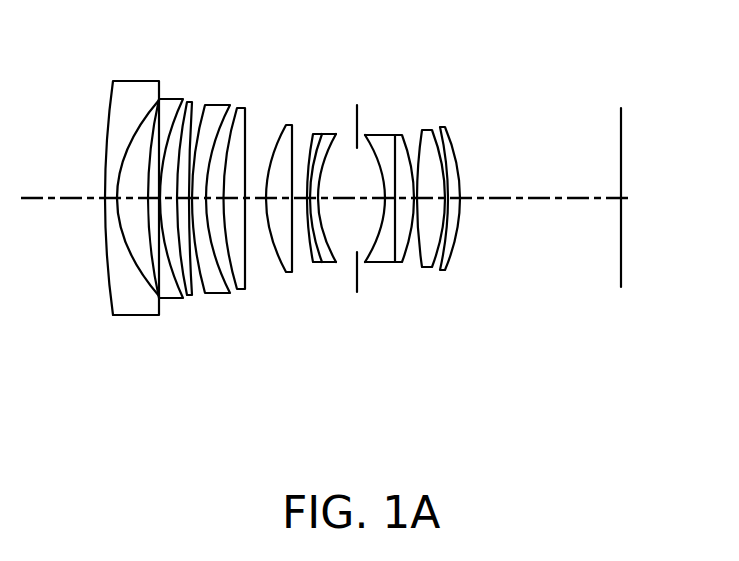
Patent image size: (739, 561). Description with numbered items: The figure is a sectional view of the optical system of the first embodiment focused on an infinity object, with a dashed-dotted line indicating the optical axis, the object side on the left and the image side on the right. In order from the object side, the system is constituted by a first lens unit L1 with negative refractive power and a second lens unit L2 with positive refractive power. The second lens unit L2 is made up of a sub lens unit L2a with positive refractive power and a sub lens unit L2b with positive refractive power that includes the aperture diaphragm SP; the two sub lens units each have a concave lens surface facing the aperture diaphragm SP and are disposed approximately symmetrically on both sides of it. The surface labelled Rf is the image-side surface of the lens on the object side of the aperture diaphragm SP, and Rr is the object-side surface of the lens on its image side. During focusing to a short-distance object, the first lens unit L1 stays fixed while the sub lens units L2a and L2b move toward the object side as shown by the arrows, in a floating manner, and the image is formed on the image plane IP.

The first lens unit L1 is at (103, 422).
The second lens unit L2 is at (394, 264).
The sub lens unit L2a is at (304, 235).
The sub lens unit L2b is at (436, 238).
The aperture diaphragm SP is at (357, 126).
The image plane IP is at (620, 137).
The radius of curvature of the image-side surface Rf is at (322, 135).
The radius of curvature of the object-side surface Rr is at (395, 135).